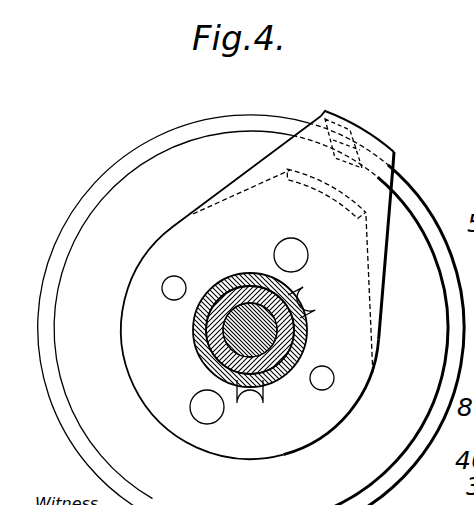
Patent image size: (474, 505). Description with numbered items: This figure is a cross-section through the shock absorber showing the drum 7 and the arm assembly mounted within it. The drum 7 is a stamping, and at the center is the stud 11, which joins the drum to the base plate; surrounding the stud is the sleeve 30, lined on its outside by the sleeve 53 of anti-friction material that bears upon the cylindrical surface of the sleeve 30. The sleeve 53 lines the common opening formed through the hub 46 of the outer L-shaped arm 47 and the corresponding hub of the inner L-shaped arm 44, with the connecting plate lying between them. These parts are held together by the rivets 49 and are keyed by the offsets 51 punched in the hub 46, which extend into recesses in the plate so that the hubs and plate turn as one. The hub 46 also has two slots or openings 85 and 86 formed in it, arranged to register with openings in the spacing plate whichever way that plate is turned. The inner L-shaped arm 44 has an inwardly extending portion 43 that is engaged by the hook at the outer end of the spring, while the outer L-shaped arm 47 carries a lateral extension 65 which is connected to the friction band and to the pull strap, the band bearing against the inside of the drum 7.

The drum 7 is at (425, 208).
The stud 11 is at (212, 338).
The sleeve 30 is at (248, 281).
The inwardly extending portion 43 is at (323, 195).
The inner L-shaped arm 44 is at (240, 192).
The hub 46 is at (303, 437).
The outer L-shaped arm 47 is at (395, 167).
The rivets 49 is at (308, 250).
The offsets 51 is at (163, 287).
The sleeve of anti-friction material 53 is at (305, 333).
The lateral extension 65 is at (374, 140).
The slot 85 is at (318, 294).
The slot 86 is at (248, 412).